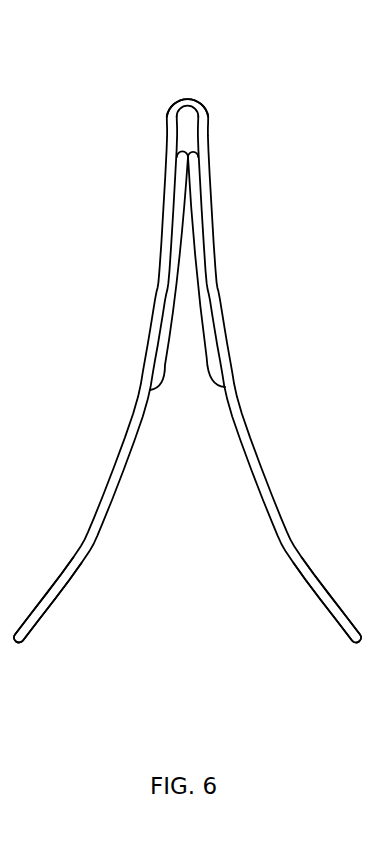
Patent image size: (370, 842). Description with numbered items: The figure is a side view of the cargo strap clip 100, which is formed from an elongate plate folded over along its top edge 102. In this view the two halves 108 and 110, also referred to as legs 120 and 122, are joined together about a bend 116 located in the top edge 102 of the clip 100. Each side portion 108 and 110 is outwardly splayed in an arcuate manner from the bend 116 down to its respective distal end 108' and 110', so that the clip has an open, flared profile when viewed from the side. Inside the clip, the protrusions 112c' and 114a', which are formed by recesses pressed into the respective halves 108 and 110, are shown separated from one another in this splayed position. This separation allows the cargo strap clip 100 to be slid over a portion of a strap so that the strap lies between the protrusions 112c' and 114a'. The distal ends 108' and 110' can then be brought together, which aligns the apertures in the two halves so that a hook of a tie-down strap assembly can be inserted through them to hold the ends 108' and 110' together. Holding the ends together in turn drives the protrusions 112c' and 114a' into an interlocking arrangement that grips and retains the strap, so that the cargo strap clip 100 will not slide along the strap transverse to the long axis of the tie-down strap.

The cargo strap clip 100 is at (246, 228).
The top edge 102 is at (175, 100).
The bend 116 is at (197, 97).
The half 108 is at (95, 380).
The half 110 is at (279, 380).
The distal end 108' is at (72, 657).
The distal end 110' is at (300, 653).
The leg 120 is at (55, 601).
The leg 122 is at (309, 588).
The protrusion 112c' is at (168, 306).
The protrusion 114a' is at (209, 321).